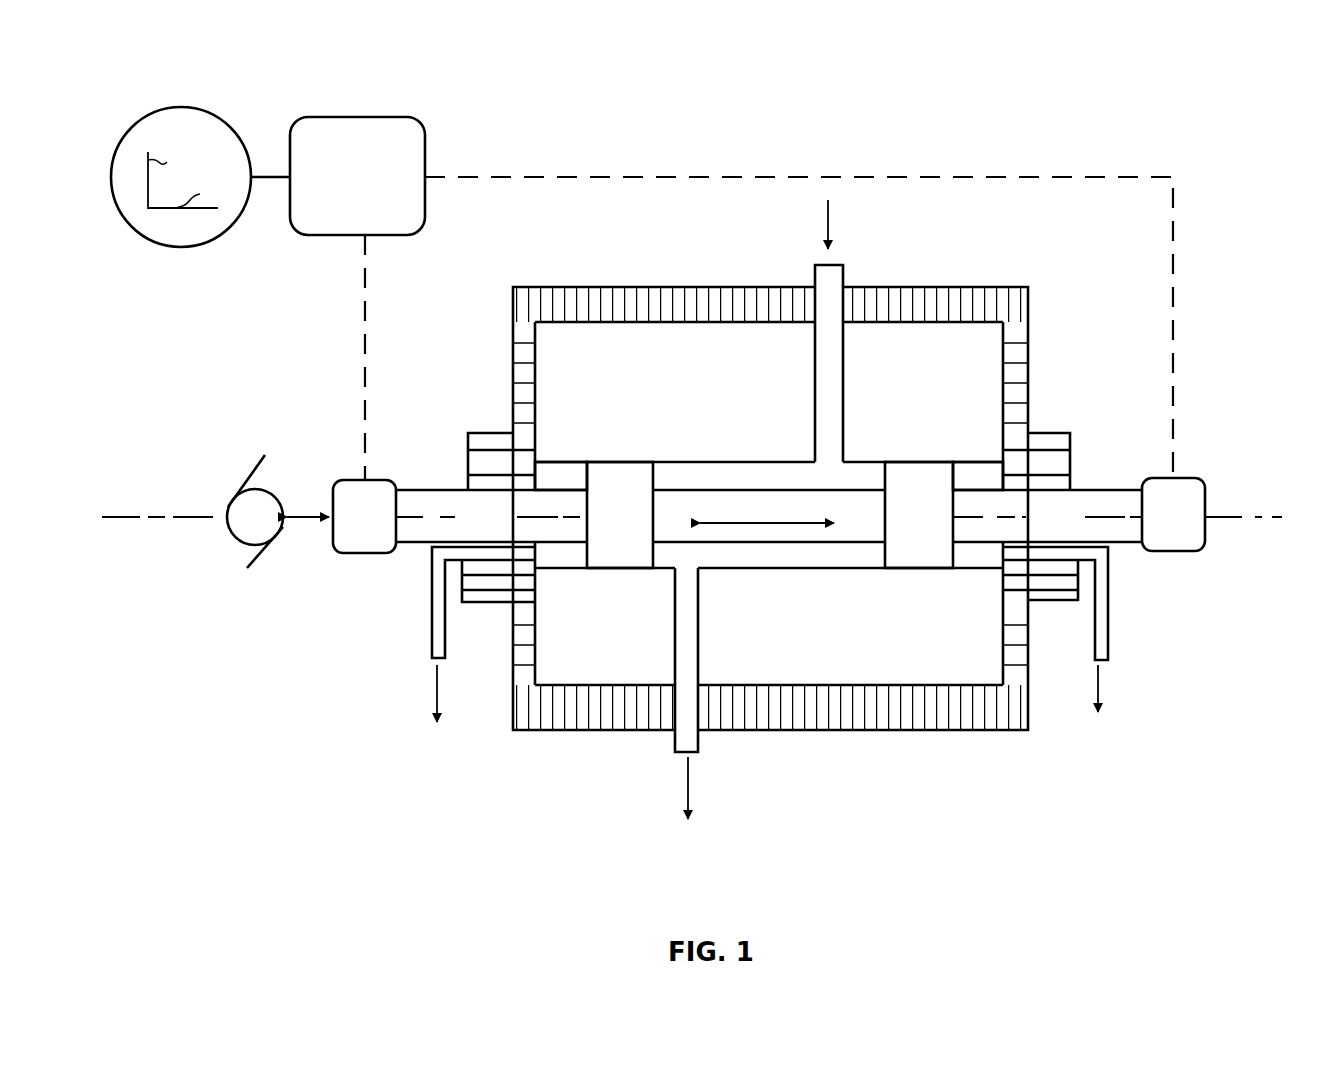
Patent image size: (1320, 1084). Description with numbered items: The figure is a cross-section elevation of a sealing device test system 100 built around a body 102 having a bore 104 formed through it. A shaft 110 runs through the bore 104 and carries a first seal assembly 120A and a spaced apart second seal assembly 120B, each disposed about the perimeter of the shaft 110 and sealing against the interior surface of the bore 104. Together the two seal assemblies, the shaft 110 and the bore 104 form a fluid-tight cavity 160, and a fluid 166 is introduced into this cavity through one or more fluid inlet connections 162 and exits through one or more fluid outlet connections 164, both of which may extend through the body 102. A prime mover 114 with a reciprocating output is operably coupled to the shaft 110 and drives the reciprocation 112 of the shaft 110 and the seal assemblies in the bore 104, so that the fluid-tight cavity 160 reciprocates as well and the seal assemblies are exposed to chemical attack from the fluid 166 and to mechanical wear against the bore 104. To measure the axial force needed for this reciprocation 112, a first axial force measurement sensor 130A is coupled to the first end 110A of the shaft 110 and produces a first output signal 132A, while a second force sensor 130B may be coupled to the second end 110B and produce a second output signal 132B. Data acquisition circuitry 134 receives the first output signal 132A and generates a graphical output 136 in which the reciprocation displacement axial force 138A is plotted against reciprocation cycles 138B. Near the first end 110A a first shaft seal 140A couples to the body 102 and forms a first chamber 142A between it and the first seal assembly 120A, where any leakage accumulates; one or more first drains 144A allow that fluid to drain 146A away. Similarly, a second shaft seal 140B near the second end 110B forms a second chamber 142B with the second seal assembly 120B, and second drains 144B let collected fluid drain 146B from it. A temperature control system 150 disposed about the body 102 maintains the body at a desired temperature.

The sealing device test system 100 is at (1218, 73).
The body 102 is at (641, 394).
The bore 104 is at (1262, 520).
The shaft 110 is at (466, 526).
The first end of the shaft 110A is at (397, 492).
The second end of the shaft 110B is at (1142, 492).
The reciprocation 112 is at (747, 518).
The prime mover 114 is at (227, 517).
The first seal assembly 120A is at (598, 526).
The second seal assembly 120B is at (897, 526).
The first axial force measurement sensor 130A is at (364, 516).
The second force sensor 130B is at (1173, 514).
The first output signal 132A is at (365, 330).
The second output signal 132B is at (907, 177).
The data acquisition circuitry 134 is at (357, 176).
The graphical output 136 is at (200, 177).
The reciprocation displacement axial force 138A is at (181, 163).
The reciprocation cycles 138B is at (209, 195).
The first shaft seal 140A is at (468, 433).
The second shaft seal 140B is at (1070, 433).
The first chamber 142A is at (576, 475).
The second chamber 142B is at (990, 475).
The first drain 144A is at (432, 610).
The second drain 144B is at (1108, 600).
The drain flow from first chamber 146A is at (437, 695).
The drain flow from second chamber 146B is at (1098, 683).
The temperature control system 150 is at (648, 287).
The fluid-tight cavity 160 is at (748, 480).
The fluid inlet connection 162 is at (845, 350).
The fluid outlet connection 164 is at (673, 645).
The fluid 166 is at (828, 227).